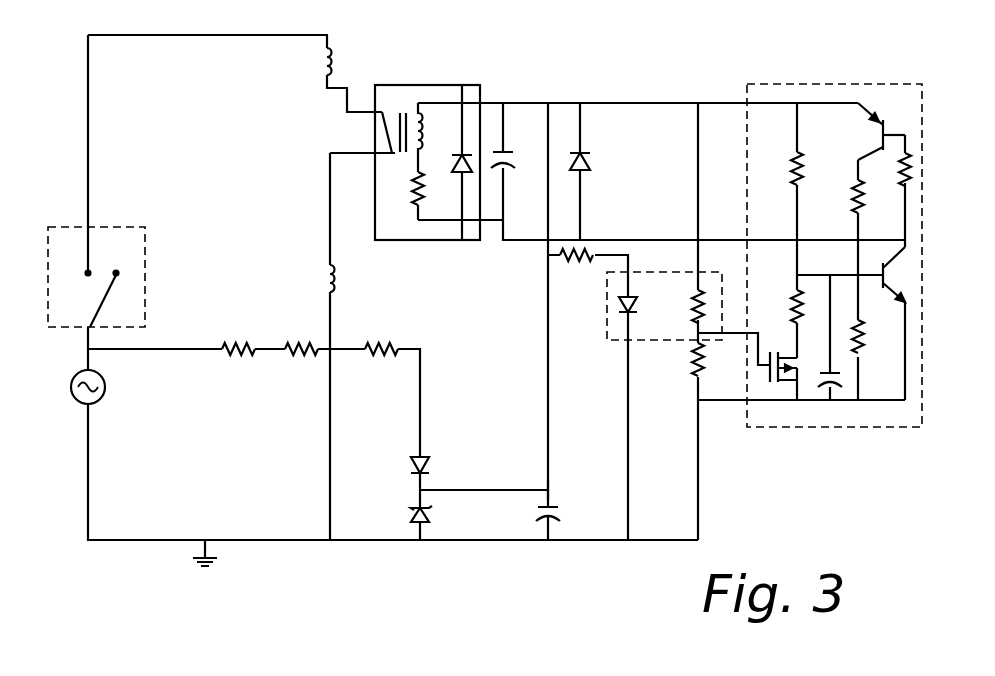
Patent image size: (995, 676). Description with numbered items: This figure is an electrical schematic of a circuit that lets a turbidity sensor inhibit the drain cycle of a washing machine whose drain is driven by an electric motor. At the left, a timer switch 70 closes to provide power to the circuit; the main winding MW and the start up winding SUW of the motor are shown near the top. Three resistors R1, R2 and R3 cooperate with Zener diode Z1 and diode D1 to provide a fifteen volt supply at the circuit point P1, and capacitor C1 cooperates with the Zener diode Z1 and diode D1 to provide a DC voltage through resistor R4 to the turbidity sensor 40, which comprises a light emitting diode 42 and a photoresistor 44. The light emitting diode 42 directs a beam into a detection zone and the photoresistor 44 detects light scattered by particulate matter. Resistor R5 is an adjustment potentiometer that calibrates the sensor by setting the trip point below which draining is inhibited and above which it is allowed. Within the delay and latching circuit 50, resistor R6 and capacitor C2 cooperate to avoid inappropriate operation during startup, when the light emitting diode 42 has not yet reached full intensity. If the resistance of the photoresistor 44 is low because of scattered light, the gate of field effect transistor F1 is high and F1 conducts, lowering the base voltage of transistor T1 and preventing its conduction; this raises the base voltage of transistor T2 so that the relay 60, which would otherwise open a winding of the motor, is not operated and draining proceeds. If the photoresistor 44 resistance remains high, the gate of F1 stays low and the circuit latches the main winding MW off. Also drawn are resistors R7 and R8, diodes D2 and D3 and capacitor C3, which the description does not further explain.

The switch 70 is at (145, 245).
The relay 60 is at (420, 85).
The delay and latching circuit 50 is at (778, 428).
The turbidity sensor 40 is at (616, 344).
The light emitting diode 42 is at (636, 294).
The photoresistor 44 is at (690, 318).
The main winding MW is at (333, 58).
The start up winding SUW is at (338, 275).
The resistor R1 is at (232, 354).
The resistor R2 is at (300, 345).
The resistor R3 is at (383, 355).
The resistor R4 is at (575, 262).
The adjustment potentiometer R5 is at (694, 374).
The resistor R6 is at (862, 350).
The resistor R7 is at (795, 292).
The resistor R8 is at (419, 204).
The diode D1 is at (425, 455).
The diode D2 is at (588, 168).
The diode D3 is at (455, 152).
The Zener diode Z1 is at (432, 518).
The capacitor C1 is at (558, 515).
The capacitor C2 is at (838, 388).
The capacitor C3 is at (510, 158).
The circuit point P1 is at (553, 490).
The field effect transistor F1 is at (776, 350).
The transistor T1 is at (901, 274).
The transistor T2 is at (875, 158).